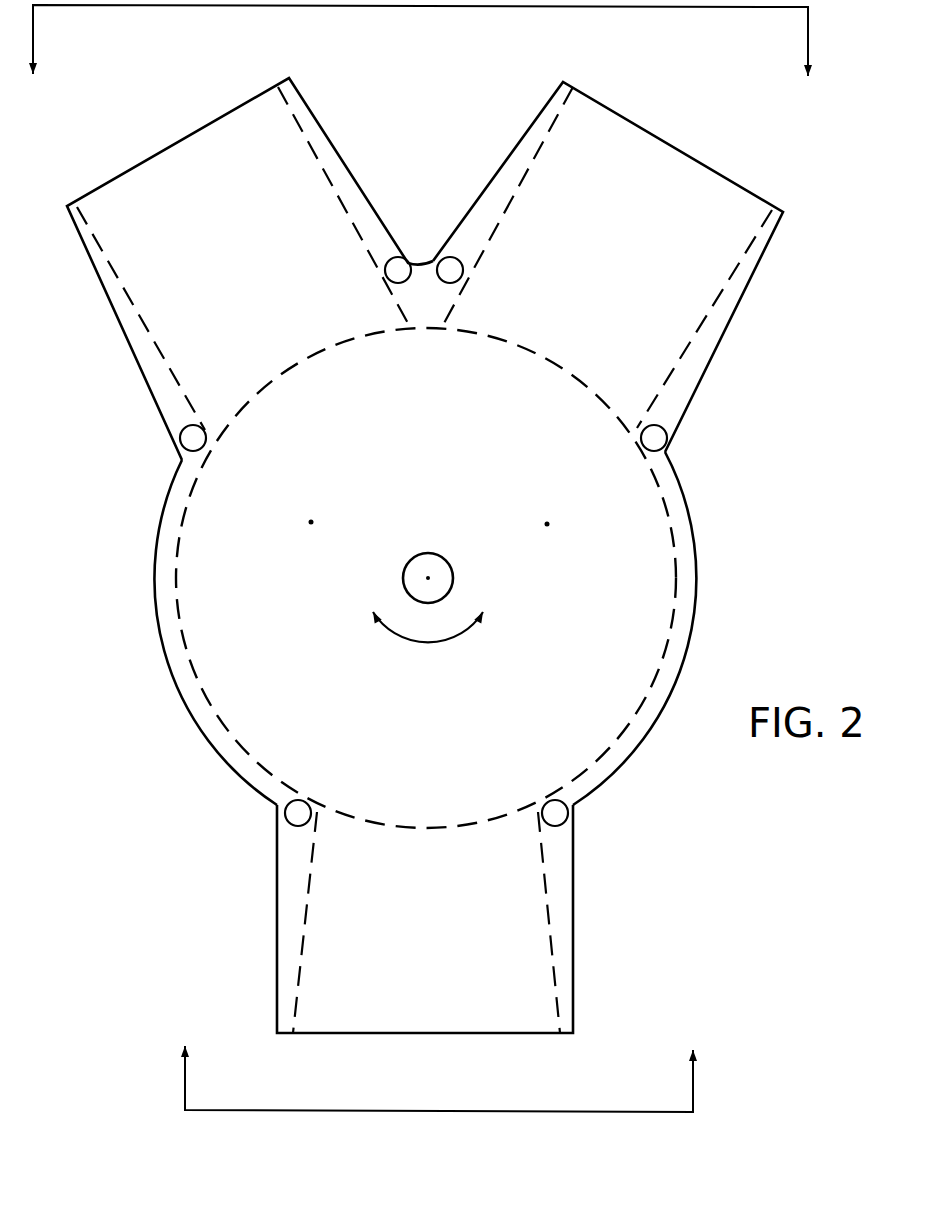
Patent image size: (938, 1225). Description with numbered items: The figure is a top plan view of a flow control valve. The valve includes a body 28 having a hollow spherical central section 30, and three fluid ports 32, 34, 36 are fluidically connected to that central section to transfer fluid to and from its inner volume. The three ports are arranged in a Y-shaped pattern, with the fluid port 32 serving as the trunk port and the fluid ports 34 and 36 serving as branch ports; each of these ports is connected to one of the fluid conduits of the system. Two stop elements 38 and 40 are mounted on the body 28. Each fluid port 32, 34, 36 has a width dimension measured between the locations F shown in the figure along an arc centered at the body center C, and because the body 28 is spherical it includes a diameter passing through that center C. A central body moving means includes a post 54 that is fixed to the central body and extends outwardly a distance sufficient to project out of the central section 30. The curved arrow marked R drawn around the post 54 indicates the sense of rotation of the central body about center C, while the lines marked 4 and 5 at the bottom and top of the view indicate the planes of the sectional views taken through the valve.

The body 28 is at (156, 569).
The hollow spherical central section 30 is at (207, 743).
The fluid port 32 is at (277, 910).
The fluid port 34 is at (327, 132).
The fluid port 36 is at (522, 134).
The stop element 38 is at (311, 522).
The stop element 40 is at (547, 524).
The post 54 is at (426, 568).
The body center C is at (452, 562).
The direction of rotation R is at (424, 646).
The locations F is at (423, 541).
The section line 4- 4 is at (436, 1066).
The section line 5- 5 is at (420, 55).